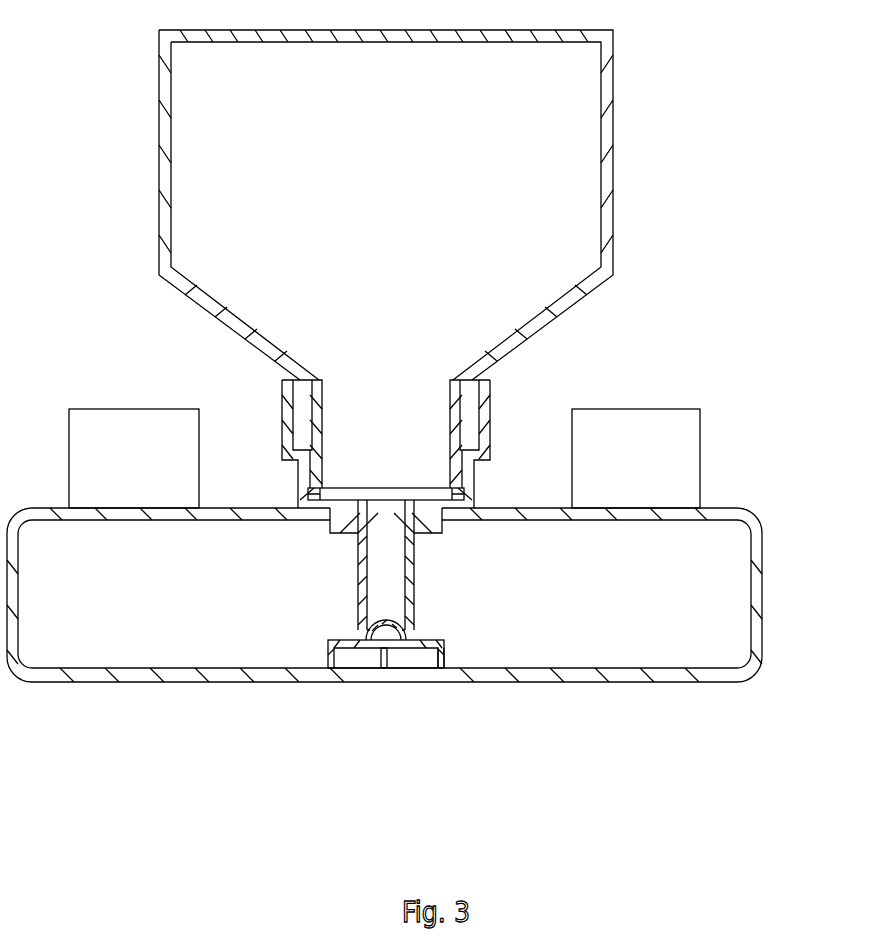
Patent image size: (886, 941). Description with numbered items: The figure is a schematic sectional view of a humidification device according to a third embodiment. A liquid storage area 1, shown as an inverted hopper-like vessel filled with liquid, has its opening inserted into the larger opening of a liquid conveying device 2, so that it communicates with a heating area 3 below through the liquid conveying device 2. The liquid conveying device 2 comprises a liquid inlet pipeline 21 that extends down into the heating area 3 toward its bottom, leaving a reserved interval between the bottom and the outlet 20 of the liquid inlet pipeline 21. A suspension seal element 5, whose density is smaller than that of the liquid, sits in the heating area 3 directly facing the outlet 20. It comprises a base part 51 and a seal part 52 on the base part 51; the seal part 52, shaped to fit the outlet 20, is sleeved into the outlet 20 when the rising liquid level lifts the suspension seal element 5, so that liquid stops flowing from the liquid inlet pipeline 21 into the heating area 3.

The liquid storage area 1 is at (573, 80).
The liquid conveying device 2 is at (483, 398).
The heating area 3 is at (740, 553).
The suspension seal element 5 is at (397, 655).
The outlet 20 is at (373, 627).
The liquid inlet pipeline 21 is at (390, 565).
The base part 51 is at (436, 645).
The seal part 52 is at (386, 626).